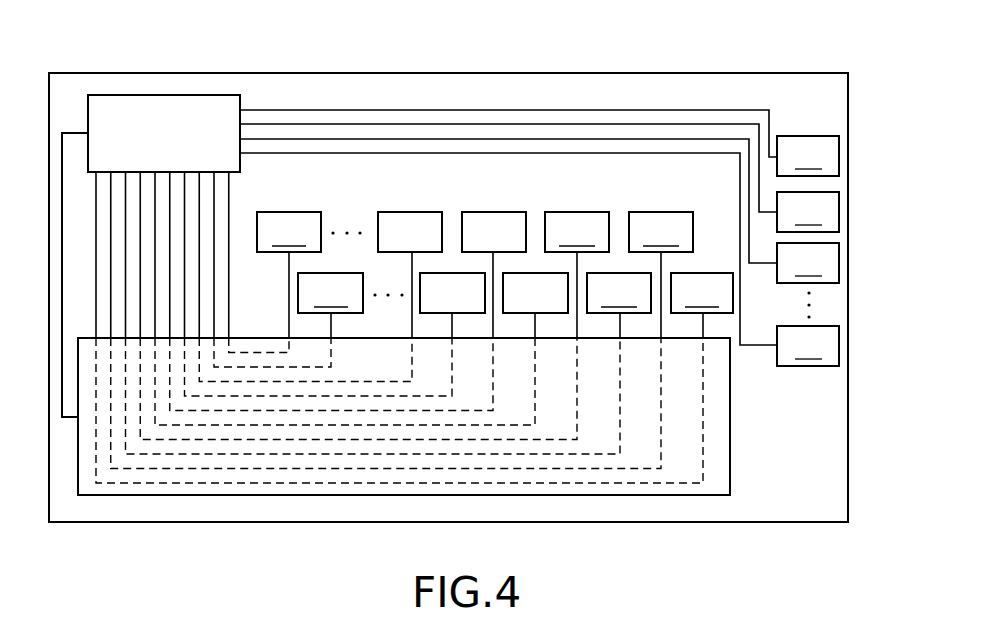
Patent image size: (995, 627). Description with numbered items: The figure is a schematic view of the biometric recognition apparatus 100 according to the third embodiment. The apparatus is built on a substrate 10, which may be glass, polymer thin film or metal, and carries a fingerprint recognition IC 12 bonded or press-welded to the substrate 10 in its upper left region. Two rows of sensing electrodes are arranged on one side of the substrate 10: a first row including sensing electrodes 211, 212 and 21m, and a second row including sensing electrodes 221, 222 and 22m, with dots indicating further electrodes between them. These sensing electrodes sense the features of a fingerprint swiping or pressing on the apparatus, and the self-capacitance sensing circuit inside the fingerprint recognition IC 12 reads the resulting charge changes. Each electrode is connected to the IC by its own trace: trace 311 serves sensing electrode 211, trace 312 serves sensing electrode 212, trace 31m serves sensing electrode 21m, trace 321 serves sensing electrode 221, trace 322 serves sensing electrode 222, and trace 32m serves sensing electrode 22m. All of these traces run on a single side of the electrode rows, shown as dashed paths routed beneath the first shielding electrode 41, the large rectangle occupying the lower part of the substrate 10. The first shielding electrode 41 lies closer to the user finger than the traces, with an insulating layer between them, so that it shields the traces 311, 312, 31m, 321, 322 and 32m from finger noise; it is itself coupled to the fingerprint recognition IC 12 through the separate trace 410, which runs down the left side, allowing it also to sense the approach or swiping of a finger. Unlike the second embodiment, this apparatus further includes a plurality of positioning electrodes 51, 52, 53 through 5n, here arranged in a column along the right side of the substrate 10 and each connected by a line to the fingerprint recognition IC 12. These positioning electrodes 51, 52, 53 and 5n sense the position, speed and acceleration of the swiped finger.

The biometric recognition apparatus 100 is at (542, 43).
The substrate 10 is at (760, 85).
The fingerprint recognition IC 12 is at (130, 107).
The trace 410 is at (72, 132).
The first shielding electrode 41 is at (722, 485).
The sensing electrode 22m is at (289, 232).
The sensing electrode 21m is at (330, 293).
The sensing electrode 222 is at (577, 232).
The sensing electrode 221 is at (661, 232).
The sensing electrode 212 is at (619, 293).
The sensing electrode 211 is at (702, 293).
The trace 32m is at (288, 263).
The trace 31m is at (332, 322).
The trace 322 is at (577, 265).
The trace 321 is at (661, 263).
The trace 312 is at (620, 325).
The trace 311 is at (703, 327).
The positioning electrode 51 is at (539, 143).
The positioning electrode 52 is at (539, 178).
The positioning electrode 53 is at (539, 211).
The positioning electrode 5n is at (539, 259).